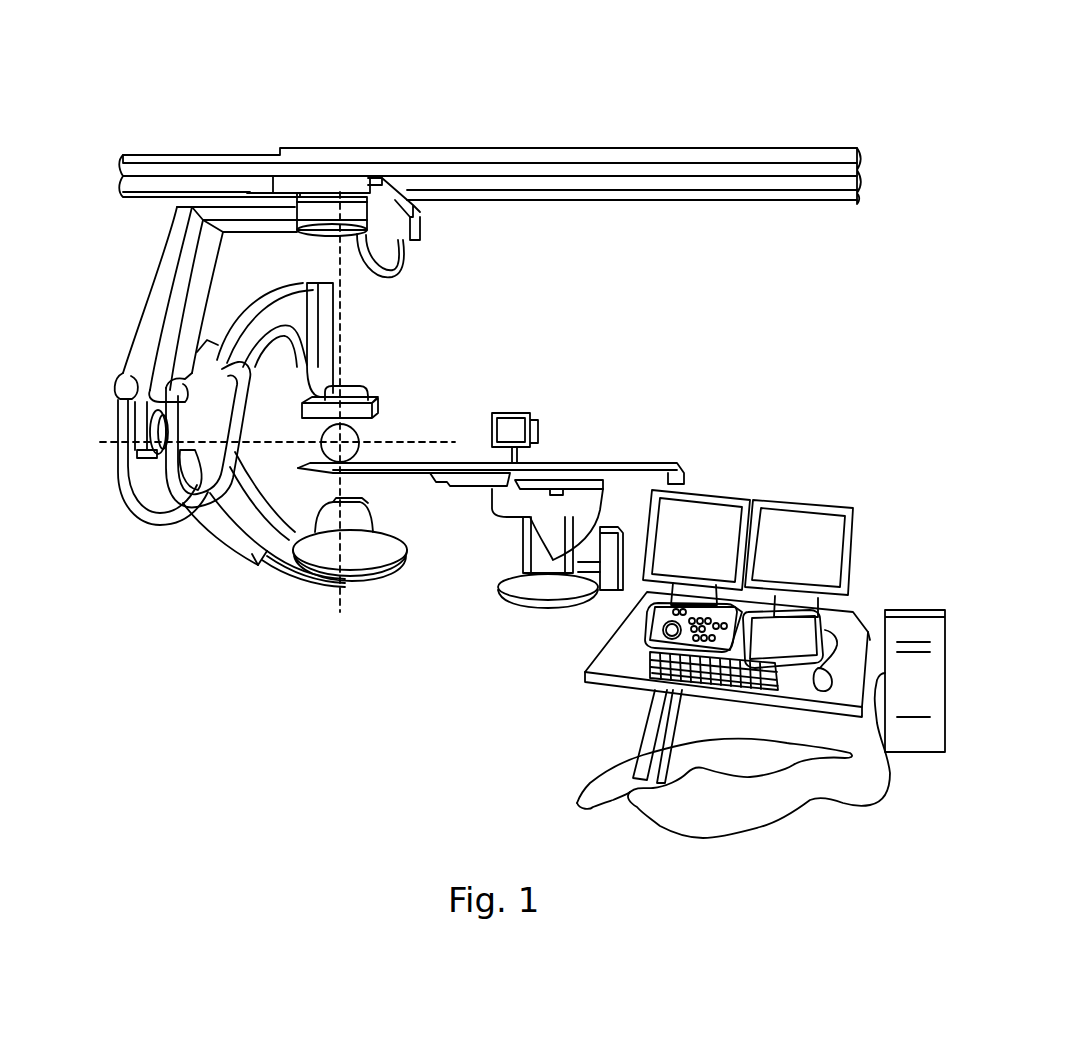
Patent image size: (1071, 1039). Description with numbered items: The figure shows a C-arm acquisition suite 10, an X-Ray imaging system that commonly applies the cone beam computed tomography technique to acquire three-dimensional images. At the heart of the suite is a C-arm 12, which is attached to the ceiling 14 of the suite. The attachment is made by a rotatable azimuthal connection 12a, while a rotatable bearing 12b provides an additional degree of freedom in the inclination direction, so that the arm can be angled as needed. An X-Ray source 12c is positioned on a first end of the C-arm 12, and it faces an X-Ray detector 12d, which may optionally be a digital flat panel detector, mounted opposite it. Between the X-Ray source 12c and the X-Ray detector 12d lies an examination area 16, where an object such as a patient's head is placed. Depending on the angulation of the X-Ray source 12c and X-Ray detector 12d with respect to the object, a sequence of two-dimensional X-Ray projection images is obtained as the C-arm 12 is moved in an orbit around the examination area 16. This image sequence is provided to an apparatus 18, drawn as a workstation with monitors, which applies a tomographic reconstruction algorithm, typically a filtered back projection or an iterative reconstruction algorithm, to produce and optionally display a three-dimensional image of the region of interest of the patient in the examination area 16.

The C-arm acquisition suite 10 is at (782, 316).
The C-arm 12 is at (112, 202).
The rotatable azimuthal connection 12a is at (336, 176).
The rotatable bearing 12b is at (112, 448).
The X-Ray source 12c is at (355, 557).
The X-Ray detector 12d is at (377, 405).
The ceiling 14 is at (801, 132).
The examination area 16 is at (348, 432).
The apparatus 18 is at (860, 594).